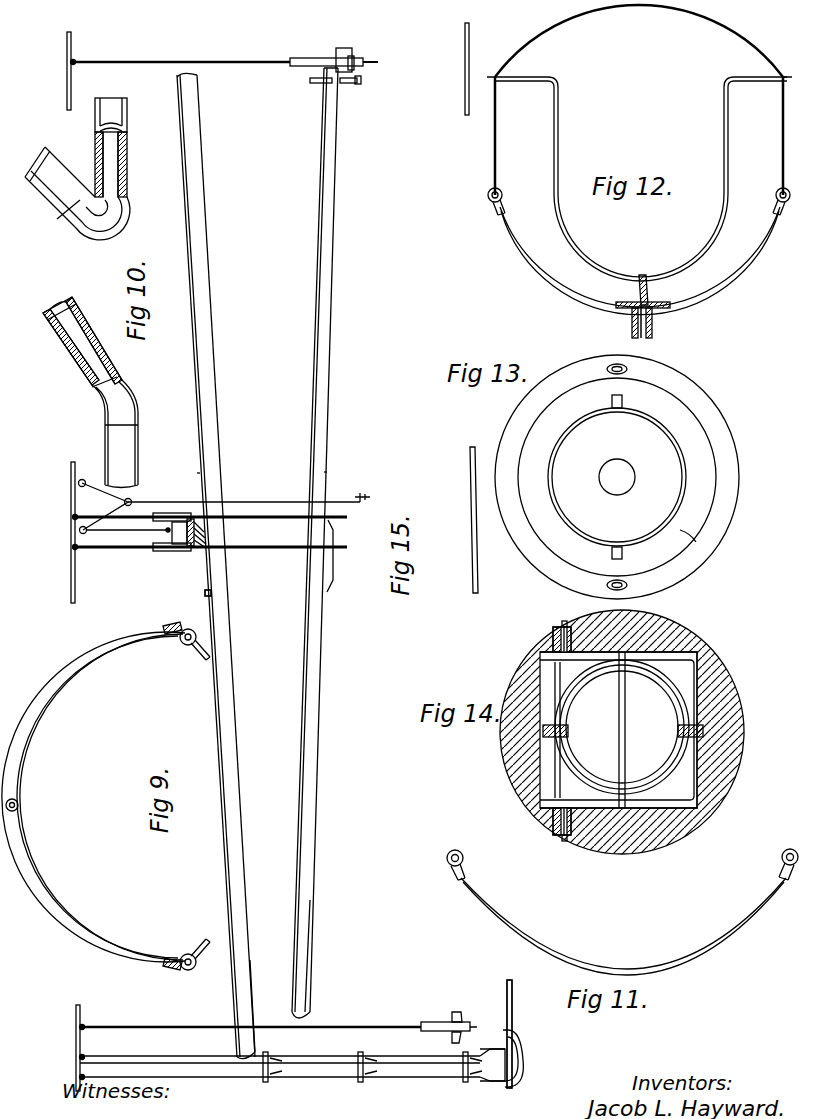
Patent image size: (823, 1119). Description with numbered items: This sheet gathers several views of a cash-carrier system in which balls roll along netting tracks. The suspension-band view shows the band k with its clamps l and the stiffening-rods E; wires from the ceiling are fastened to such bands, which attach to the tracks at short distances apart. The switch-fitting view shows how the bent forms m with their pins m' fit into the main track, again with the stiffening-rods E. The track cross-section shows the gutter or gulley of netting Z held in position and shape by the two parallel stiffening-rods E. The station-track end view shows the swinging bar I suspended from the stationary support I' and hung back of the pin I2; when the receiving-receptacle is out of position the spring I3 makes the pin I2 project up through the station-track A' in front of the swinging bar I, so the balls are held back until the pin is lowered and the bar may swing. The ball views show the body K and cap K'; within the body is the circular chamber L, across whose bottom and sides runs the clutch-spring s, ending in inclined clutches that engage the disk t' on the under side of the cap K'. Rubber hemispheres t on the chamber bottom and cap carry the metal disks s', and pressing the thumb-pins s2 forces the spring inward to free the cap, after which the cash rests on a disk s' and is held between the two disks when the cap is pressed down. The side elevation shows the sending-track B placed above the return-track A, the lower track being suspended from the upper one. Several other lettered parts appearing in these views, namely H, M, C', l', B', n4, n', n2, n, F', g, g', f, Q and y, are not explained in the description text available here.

In FIG. 15, the cross rod H is at (245, 65).
In FIG. 15, the sleeve M is at (294, 68).
In FIG. 15, the clamp C' is at (335, 55).
In FIG. 15, the bracket l' is at (321, 88).
In FIG. 15, the swinging bar I is at (349, 90).
In FIG. 12, the swinging bar I is at (639, 179).
In FIG. 15, the stationary support I' is at (364, 88).
In FIG. 12, the stationary support I' is at (639, 160).
In FIG. 12, the pin I2 is at (648, 291).
In FIG. 12, the spring I3 is at (654, 321).
In FIG. 15, the station-track A' is at (327, 543).
In FIG. 15, the return-track A is at (318, 956).
In FIG. 15, the side rail B' is at (216, 565).
In FIG. 15, the sending-track B is at (259, 996).
In FIG. 15, the stiffening-rods E is at (192, 475).
In FIG. 10, the stiffening-rods E is at (63, 165).
In FIG. 9, the stiffening-rods E is at (202, 660).
In FIG. 12, the stiffening-rods E is at (503, 195).
In FIG. 11, the stiffening-rods E is at (464, 859).
In FIG. 15, the pulley n4 is at (91, 483).
In FIG. 15, the pulley n' is at (239, 500).
In FIG. 15, the pulley n2 is at (88, 536).
In FIG. 15, the cord n is at (126, 513).
In FIG. 15, the clamps l is at (203, 600).
In FIG. 9, the clamps l is at (188, 797).
In FIG. 15, the pawl F' is at (445, 1022).
In FIG. 15, the tube g is at (292, 1062).
In FIG. 15, the tube joint g' is at (372, 1058).
In FIG. 15, the hook f is at (522, 1066).
In FIG. 15, the socket Q is at (488, 1082).
In FIG. 15, the band k is at (506, 1016).
In FIG. 9, the band k is at (144, 638).
In FIG. 10, the bent forms m is at (93, 317).
In FIG. 10, the pins m' is at (96, 258).
In FIG. 12, the slat y is at (458, 69).
In FIG. 13, the slat y is at (466, 520).
In FIG. 13, the body of the ball K is at (630, 477).
In FIG. 14, the body of the ball K is at (634, 732).
In FIG. 14, the cap K' is at (592, 730).
In FIG. 13, the circular chamber L is at (687, 456).
In FIG. 14, the circular chamber L is at (668, 788).
In FIG. 13, the clutch-spring s is at (627, 477).
In FIG. 14, the clutch-spring s is at (563, 731).
In FIG. 13, the metal disk s' is at (631, 477).
In FIG. 14, the metal disk s' is at (622, 727).
In FIG. 13, the thumb-pins s2 is at (628, 367).
In FIG. 14, the thumb-pins s2 is at (564, 622).
In FIG. 14, the rubber hemispheres t is at (623, 720).
In FIG. 14, the disk t' is at (542, 730).
In FIG. 11, the netting Z is at (636, 964).